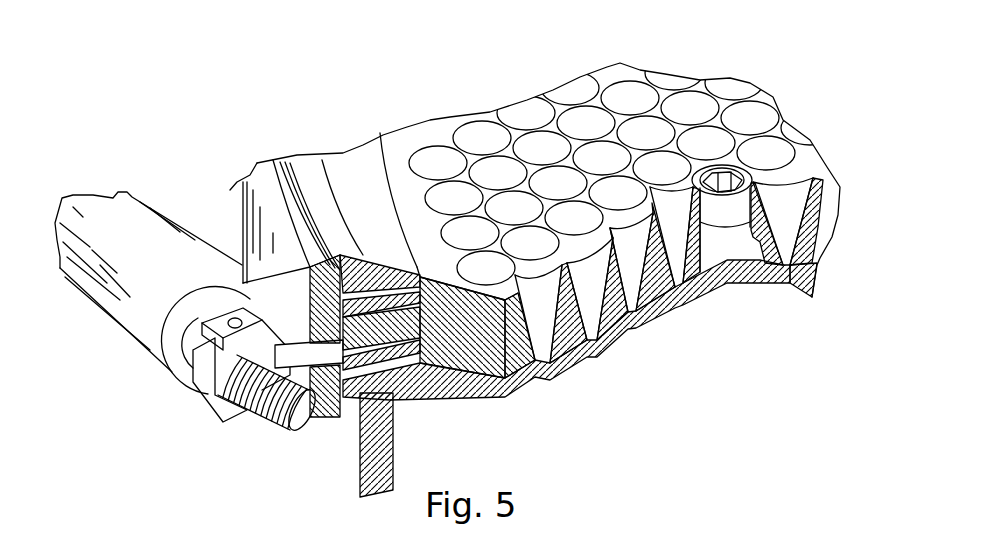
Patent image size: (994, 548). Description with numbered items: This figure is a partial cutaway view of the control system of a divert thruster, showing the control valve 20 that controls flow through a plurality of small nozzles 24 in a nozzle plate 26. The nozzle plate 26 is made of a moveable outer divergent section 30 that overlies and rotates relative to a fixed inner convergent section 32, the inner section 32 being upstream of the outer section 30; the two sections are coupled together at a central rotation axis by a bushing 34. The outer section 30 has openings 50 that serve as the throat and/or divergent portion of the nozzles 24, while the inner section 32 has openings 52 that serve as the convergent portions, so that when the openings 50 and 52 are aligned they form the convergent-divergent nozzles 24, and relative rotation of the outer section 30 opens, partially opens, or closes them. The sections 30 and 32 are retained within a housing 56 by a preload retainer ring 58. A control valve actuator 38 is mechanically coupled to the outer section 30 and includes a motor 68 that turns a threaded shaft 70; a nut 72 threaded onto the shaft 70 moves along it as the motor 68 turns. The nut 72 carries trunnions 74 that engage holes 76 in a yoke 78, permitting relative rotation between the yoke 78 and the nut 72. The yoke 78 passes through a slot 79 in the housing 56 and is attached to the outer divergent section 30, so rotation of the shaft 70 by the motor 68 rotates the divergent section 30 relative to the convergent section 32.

The control valve 20 is at (200, 117).
The nozzles 24 is at (743, 117).
The nozzle plate 26 is at (618, 48).
The outer divergent section 30 is at (522, 397).
The inner convergent section 32 is at (617, 350).
The bushing 34 is at (727, 177).
The control valve actuator 38 is at (105, 348).
The openings 50 is at (512, 213).
The openings 52 is at (648, 346).
The housing 56 is at (287, 217).
The preload retainer ring 58 is at (353, 207).
The motor 68 is at (155, 217).
The threaded shaft 70 is at (293, 425).
The nut 72 is at (188, 365).
The trunnions 74 is at (233, 323).
The holes 76 is at (203, 393).
The yoke 78 is at (240, 305).
The slot 79 is at (315, 395).